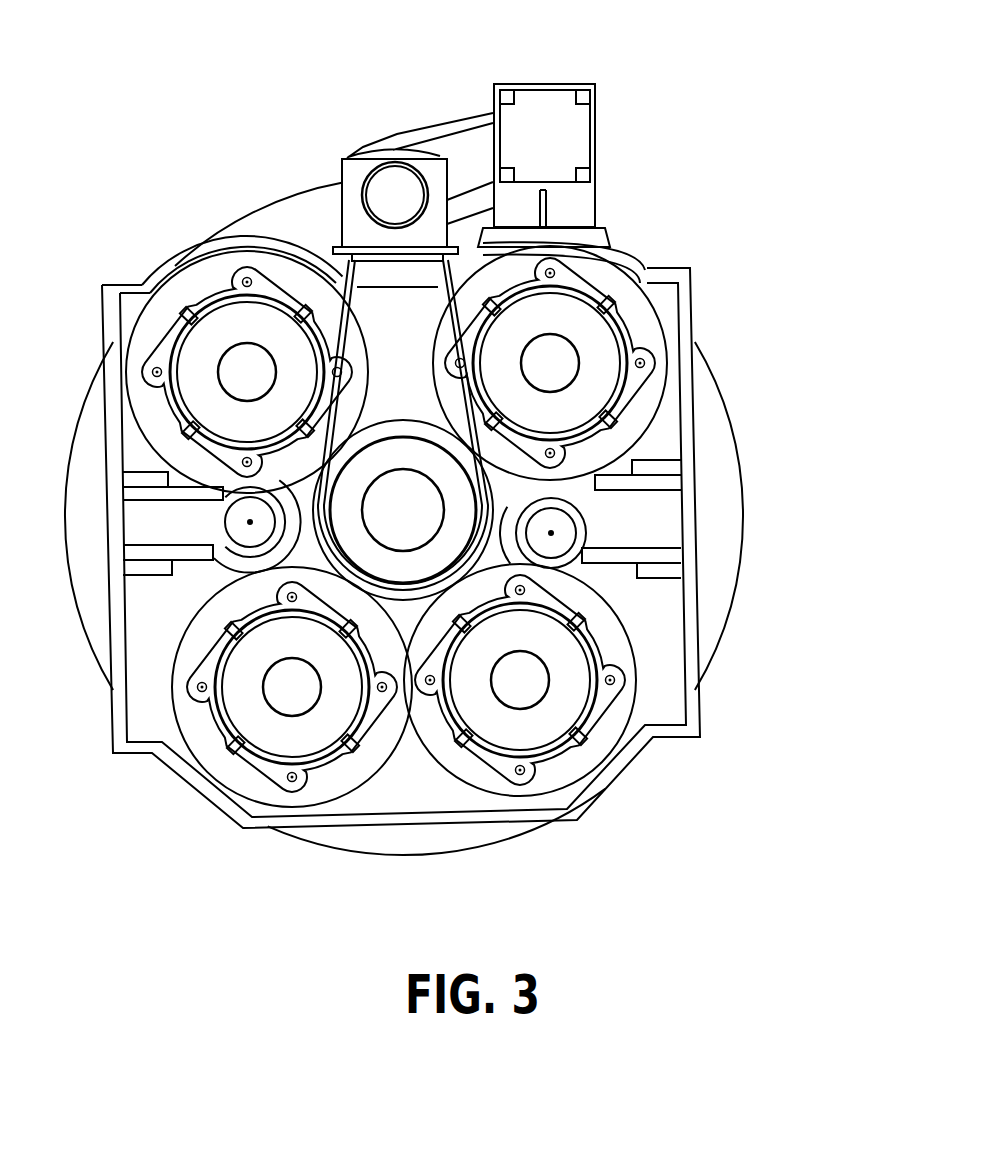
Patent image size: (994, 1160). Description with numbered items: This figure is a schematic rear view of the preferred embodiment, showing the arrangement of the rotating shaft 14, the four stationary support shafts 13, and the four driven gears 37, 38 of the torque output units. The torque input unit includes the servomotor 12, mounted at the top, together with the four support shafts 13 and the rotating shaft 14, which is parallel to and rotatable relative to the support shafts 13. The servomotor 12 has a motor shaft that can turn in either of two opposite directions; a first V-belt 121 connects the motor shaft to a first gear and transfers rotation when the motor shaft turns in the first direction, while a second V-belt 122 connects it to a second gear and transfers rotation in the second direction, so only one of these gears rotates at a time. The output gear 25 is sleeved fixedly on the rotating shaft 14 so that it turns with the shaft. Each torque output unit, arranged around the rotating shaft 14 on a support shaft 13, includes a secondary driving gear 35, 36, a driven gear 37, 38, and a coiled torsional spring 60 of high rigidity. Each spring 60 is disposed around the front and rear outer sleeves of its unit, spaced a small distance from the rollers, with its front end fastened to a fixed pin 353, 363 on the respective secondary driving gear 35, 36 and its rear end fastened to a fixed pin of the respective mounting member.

The servomotor 12 is at (537, 84).
The stationary support shafts 13 is at (666, 363).
The rotating shaft 14 is at (420, 503).
The output gear 25 is at (565, 495).
The secondary driving gear 35 is at (587, 757).
The secondary driving gear 36 is at (210, 782).
The driven gear 37 is at (553, 727).
The driven gear 38 is at (612, 262).
The coiled torsional spring 60 is at (450, 718).
The first V-belt 121 is at (666, 363).
The second V-belt 122 is at (593, 292).
The fixed pin 353 is at (522, 768).
The fixed pin 363 is at (293, 775).